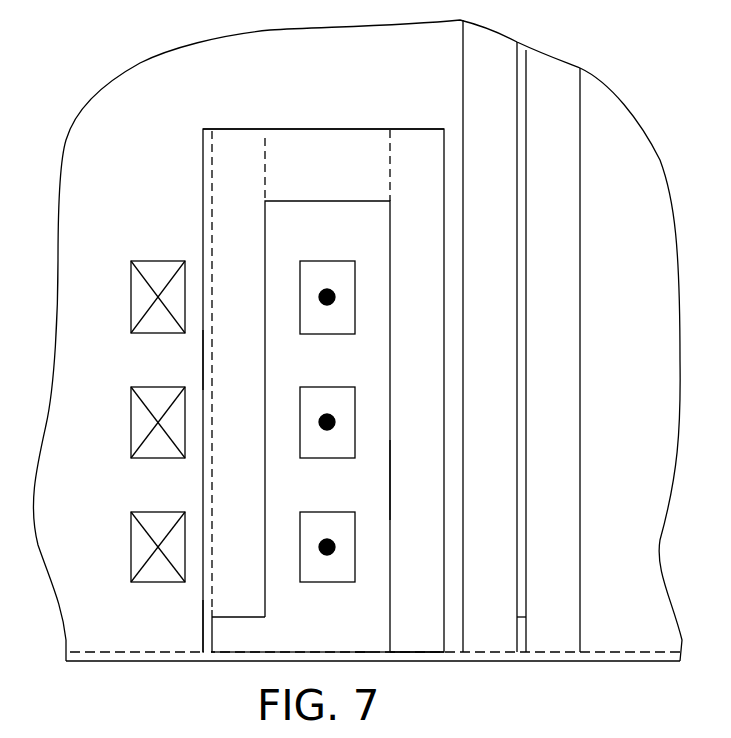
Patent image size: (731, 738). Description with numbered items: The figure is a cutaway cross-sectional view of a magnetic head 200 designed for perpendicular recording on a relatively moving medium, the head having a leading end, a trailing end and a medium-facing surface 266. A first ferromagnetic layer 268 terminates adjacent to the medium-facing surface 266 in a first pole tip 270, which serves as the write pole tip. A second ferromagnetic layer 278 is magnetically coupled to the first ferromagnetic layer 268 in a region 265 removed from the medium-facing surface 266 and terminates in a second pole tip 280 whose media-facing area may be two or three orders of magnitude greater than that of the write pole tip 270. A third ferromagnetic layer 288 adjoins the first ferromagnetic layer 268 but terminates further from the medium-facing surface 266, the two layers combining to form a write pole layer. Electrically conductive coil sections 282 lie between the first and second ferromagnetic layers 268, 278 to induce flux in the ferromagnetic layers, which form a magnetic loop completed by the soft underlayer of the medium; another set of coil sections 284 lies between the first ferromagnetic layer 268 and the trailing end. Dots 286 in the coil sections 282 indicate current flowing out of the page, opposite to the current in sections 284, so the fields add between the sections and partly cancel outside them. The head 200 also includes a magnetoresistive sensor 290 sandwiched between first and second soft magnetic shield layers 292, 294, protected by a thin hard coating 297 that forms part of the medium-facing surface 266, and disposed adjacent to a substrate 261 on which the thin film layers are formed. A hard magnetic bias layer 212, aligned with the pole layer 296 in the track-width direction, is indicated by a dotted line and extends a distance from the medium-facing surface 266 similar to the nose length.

The magnetic head 200 is at (632, 81).
The hard magnetic bias layer 212 is at (205, 606).
The substrate 261 is at (646, 380).
The region 265 is at (445, 122).
The medium-facing surface 266 is at (590, 670).
The first ferromagnetic layer 268 is at (212, 492).
The first pole tip 270 is at (208, 667).
The second ferromagnetic layer 278 is at (430, 433).
The second pole tip 280 is at (416, 665).
The coil sections 282 is at (357, 458).
The coil sections 284 is at (167, 278).
The dots 286 is at (335, 297).
The third ferromagnetic layer 288 is at (262, 243).
The magnetoresistive sensor 290 is at (527, 625).
The first soft magnetic shield layer 292 is at (565, 433).
The second soft magnetic shield layer 294 is at (501, 433).
The pole layer 296 is at (196, 360).
The thin hard coating 297 is at (362, 650).